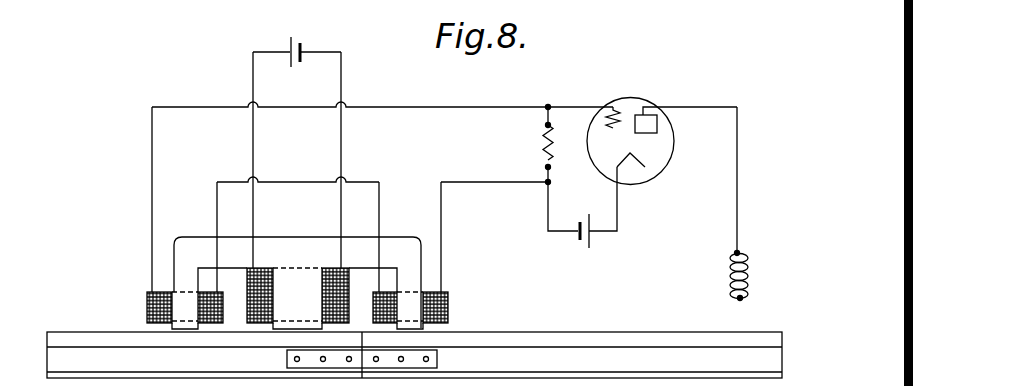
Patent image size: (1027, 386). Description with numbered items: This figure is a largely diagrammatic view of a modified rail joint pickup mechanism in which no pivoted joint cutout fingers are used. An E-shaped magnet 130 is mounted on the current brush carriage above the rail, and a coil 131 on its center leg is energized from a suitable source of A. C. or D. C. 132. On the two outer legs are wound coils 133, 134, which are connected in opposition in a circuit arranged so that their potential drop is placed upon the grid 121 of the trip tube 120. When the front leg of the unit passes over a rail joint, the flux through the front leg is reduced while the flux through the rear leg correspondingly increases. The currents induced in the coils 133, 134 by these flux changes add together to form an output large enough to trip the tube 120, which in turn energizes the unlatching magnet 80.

The unlatching magnet 80 is at (730, 279).
The trip tube 120 is at (662, 141).
The grid 121 is at (617, 111).
The E-shaped magnet 130 is at (391, 236).
The coil 131 is at (367, 290).
The source of A. C. or D. C. 132 is at (303, 47).
The coil 133 is at (147, 302).
The coil 134 is at (449, 303).